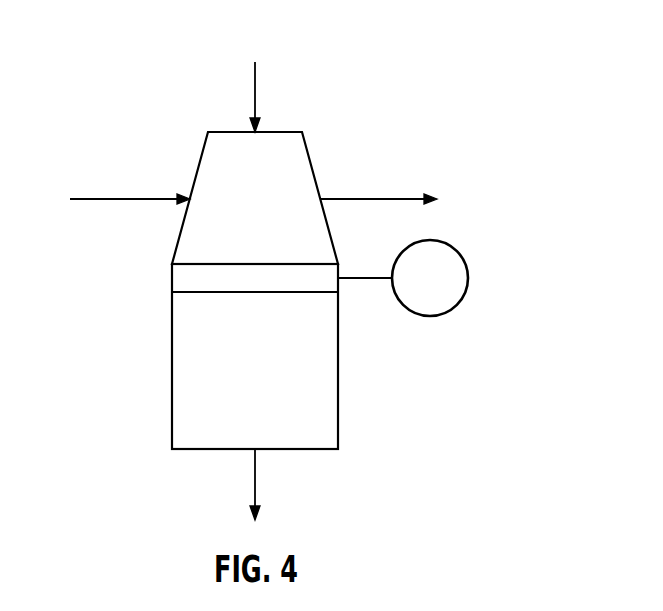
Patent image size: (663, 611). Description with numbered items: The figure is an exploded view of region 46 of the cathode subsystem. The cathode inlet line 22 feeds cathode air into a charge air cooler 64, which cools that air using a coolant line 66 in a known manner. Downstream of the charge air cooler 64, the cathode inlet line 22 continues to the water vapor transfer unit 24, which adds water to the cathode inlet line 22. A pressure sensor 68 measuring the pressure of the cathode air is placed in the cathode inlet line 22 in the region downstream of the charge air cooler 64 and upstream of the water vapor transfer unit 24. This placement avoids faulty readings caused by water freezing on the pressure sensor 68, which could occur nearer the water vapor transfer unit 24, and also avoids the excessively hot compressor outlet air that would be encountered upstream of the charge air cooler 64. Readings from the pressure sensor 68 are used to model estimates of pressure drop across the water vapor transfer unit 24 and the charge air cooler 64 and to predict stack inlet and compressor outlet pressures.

The region 46 is at (128, 80).
The cathode inlet line 22 is at (255, 97).
The charge air cooler 64 is at (197, 168).
The coolant line 66 is at (355, 199).
The water vapor transfer unit 24 is at (339, 372).
The pressure sensor 68 is at (468, 278).